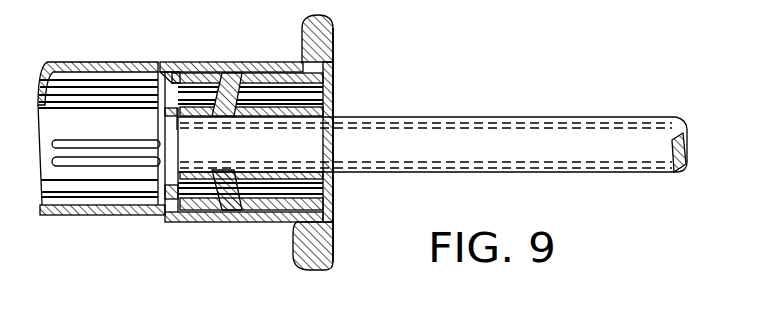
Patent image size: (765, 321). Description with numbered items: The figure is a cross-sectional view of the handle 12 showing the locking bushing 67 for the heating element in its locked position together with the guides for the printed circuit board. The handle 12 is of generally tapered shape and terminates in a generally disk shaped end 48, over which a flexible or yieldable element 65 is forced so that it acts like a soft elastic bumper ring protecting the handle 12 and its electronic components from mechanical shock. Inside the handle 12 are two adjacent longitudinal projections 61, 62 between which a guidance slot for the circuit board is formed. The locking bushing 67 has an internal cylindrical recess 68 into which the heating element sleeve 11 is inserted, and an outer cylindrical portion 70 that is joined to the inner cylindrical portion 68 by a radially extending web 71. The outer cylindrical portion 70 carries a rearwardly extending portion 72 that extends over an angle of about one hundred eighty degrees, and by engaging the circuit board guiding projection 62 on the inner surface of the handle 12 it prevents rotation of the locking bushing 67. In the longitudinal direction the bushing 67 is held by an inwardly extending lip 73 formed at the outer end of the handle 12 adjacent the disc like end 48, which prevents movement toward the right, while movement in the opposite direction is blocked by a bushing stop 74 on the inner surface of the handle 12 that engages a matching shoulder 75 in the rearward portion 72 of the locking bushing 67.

The heating element sleeve 11 is at (468, 172).
The handle 12 is at (112, 214).
The disk shaped end 48 is at (315, 16).
The longitudinal projection 61 is at (74, 164).
The longitudinal projection 62 is at (84, 130).
The flexible element 65 is at (333, 34).
The locking bushing 67 is at (336, 95).
The internal cylindrical recess 68 is at (331, 186).
The outer cylindrical portion 70 is at (247, 64).
The radially extending web 71 is at (212, 205).
The rearwardly extending portion 72 is at (104, 68).
The inwardly extending lip 73 is at (330, 47).
The bushing stop 74 is at (165, 72).
The shoulder 75 is at (176, 70).